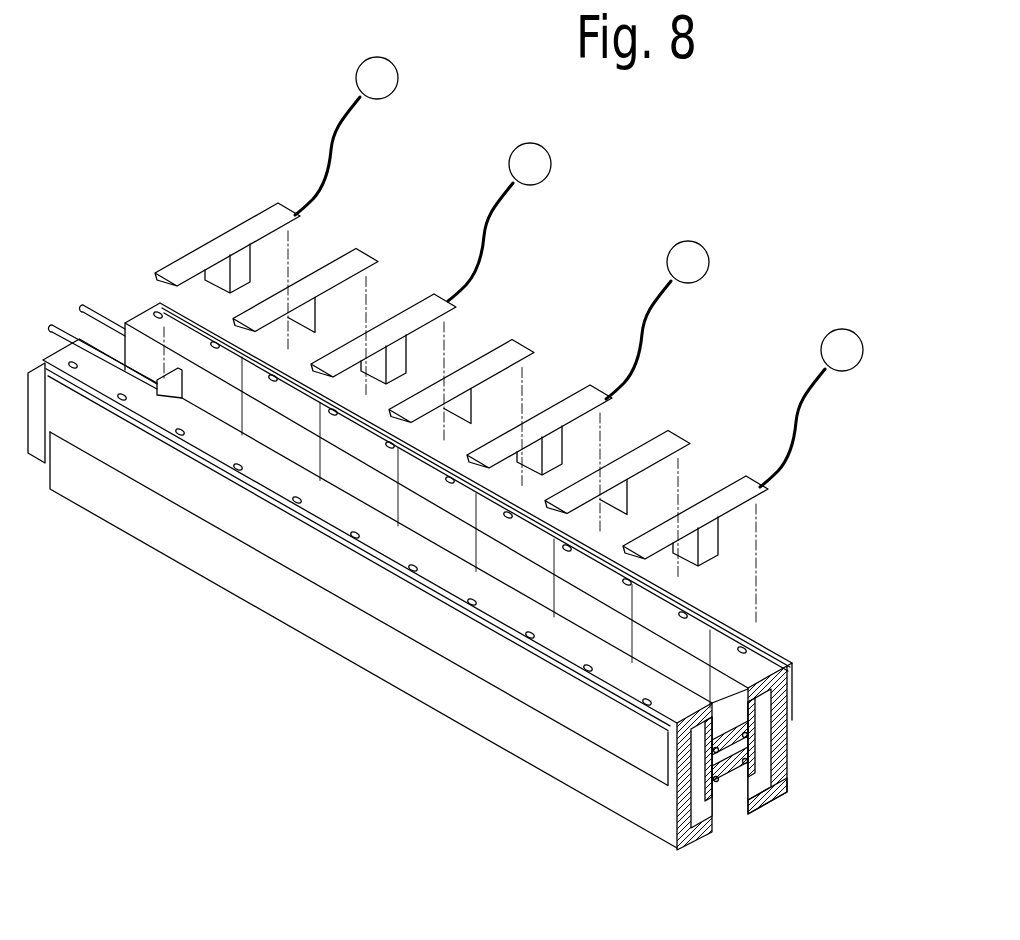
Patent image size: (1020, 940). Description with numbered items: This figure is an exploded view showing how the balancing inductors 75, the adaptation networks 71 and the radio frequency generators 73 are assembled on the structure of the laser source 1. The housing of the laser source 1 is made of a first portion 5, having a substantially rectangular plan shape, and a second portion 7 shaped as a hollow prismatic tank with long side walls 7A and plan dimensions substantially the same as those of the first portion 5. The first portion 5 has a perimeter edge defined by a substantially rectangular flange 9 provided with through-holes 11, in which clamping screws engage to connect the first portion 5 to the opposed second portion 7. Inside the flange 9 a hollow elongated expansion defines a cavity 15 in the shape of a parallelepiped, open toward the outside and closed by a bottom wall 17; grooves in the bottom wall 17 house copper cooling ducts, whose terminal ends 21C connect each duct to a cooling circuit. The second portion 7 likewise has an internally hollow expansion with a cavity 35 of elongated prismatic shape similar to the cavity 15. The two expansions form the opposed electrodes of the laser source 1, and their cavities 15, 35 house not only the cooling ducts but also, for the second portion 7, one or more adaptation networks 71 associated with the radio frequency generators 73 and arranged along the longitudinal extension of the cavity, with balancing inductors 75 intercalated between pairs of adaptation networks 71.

The laser source 1 is at (607, 279).
The first portion 5 is at (709, 632).
The second portion 7 is at (265, 600).
The long side walls 7A is at (418, 685).
The flange 9 is at (765, 663).
The through-holes 11 is at (690, 625).
The cavity 15 is at (693, 680).
The bottom wall 17 is at (727, 725).
The terminal ends 21C is at (84, 318).
The cavity 35 is at (725, 810).
The adaptation networks 71 is at (257, 223).
The radio frequency generators 73 is at (398, 80).
The balancing inductors 75 is at (345, 267).